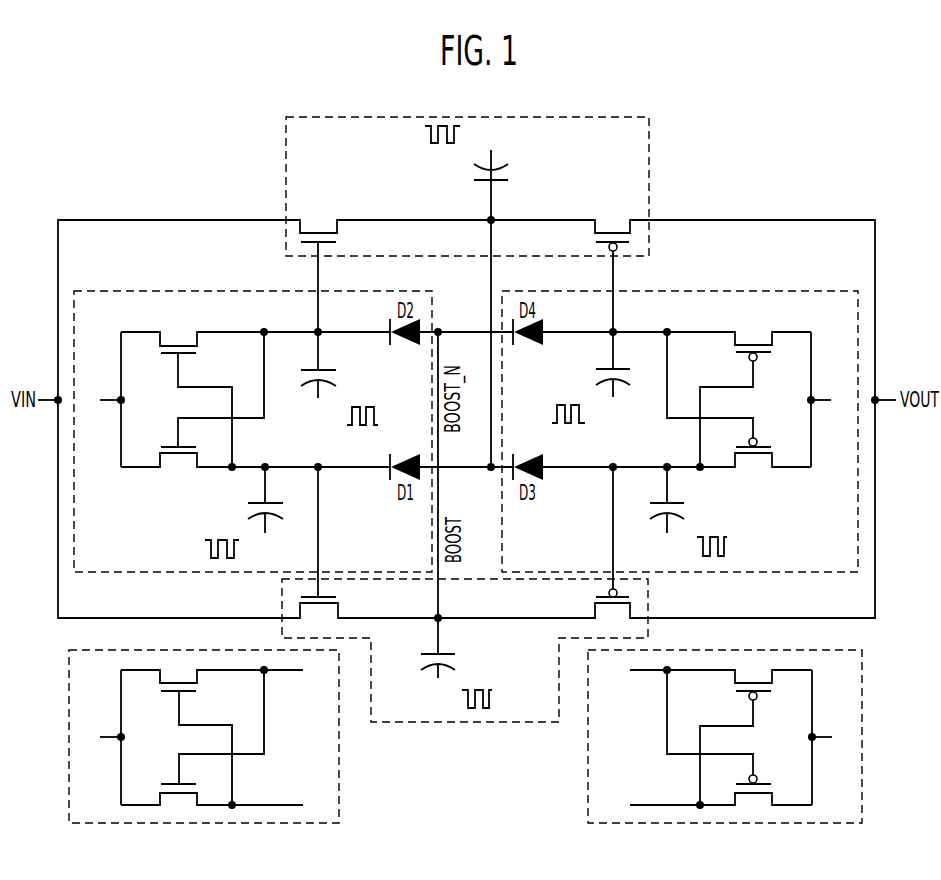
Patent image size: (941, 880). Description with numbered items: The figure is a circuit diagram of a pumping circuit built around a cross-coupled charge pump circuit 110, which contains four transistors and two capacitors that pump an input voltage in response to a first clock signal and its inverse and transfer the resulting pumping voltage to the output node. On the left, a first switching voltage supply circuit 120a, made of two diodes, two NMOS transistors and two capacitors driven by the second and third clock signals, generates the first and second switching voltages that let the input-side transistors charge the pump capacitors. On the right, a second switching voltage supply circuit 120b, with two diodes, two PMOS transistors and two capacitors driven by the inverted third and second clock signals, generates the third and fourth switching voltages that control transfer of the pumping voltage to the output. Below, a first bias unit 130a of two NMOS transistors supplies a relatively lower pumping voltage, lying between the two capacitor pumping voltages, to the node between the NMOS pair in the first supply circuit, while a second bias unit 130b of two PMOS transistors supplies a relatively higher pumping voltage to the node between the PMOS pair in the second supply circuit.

The cross-coupled charge pump circuit 110 is at (286, 166).
The first switching voltage supply circuit 120a is at (147, 291).
The second switching voltage supply circuit 120b is at (752, 291).
The first bias unit 130a is at (339, 795).
The second bias unit 130b is at (588, 796).